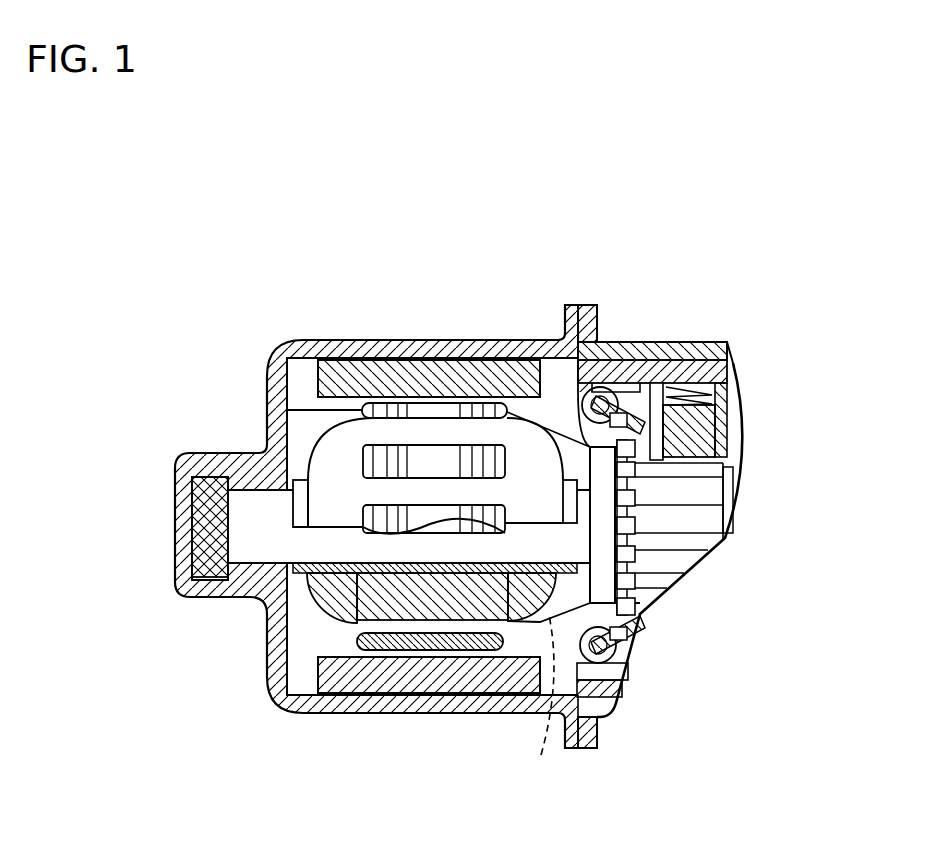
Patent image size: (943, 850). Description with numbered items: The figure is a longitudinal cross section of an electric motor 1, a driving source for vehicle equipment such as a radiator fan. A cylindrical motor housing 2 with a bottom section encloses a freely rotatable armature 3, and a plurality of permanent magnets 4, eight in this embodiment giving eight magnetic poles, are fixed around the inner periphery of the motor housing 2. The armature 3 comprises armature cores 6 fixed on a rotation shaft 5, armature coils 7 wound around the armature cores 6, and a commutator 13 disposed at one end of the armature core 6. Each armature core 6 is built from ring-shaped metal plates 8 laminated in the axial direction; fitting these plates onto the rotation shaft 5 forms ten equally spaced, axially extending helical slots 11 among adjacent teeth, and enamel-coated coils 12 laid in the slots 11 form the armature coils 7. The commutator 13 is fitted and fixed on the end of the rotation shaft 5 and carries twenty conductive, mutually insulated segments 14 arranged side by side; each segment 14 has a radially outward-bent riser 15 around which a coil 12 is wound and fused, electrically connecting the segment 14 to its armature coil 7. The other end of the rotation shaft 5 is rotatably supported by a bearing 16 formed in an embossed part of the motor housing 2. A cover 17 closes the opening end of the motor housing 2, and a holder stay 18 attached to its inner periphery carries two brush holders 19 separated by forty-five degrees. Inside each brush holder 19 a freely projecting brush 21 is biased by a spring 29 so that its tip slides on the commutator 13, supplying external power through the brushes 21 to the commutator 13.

The electric motor 1 is at (463, 313).
The motor housing 2 is at (375, 340).
The armature 3 is at (532, 455).
The permanent magnets 4 is at (497, 390).
The rotation shaft 5 is at (280, 545).
The armature core 6 is at (410, 517).
The armature coil 7 is at (544, 704).
The metal plates 8 is at (370, 460).
The slots 11 is at (476, 492).
The coil 12 is at (585, 445).
The commutator 13 is at (733, 476).
The segments 14 is at (713, 538).
The riser 15 is at (637, 534).
The bearing 16 is at (233, 567).
The cover 17 is at (612, 352).
The holder stay 18 is at (668, 375).
The brush holder 19 is at (720, 430).
The brush 21 is at (732, 348).
The spring 29 is at (711, 383).